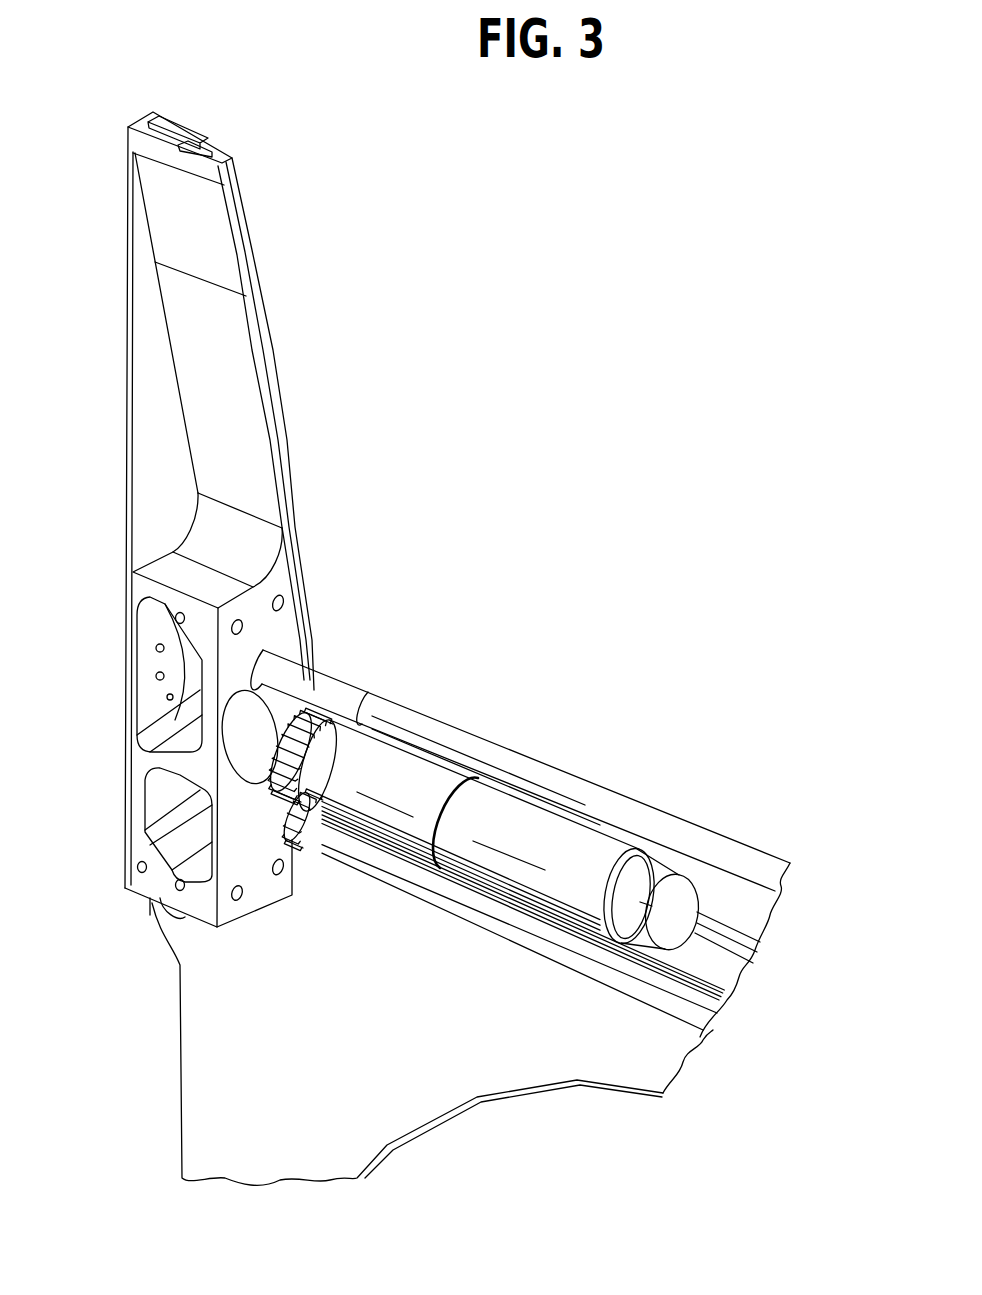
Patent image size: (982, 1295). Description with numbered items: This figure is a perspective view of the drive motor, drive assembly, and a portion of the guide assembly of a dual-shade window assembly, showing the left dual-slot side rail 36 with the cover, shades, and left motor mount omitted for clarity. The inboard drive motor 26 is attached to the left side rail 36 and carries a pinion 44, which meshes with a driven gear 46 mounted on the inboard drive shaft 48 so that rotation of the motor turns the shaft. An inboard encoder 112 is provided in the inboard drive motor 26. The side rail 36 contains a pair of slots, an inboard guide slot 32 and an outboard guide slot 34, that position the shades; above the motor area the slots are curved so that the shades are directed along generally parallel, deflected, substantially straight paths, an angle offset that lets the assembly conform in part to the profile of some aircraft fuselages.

The inboard drive motor 26 is at (530, 828).
The inboard guide slot 32 is at (232, 158).
The outboard guide slot 34 is at (167, 123).
The left side dual-slot side rail 36 is at (166, 1034).
The pinion 44 is at (320, 745).
The driven gear 46 is at (325, 855).
The inboard drive shaft 48 is at (722, 978).
The inboard encoder 112 is at (645, 880).